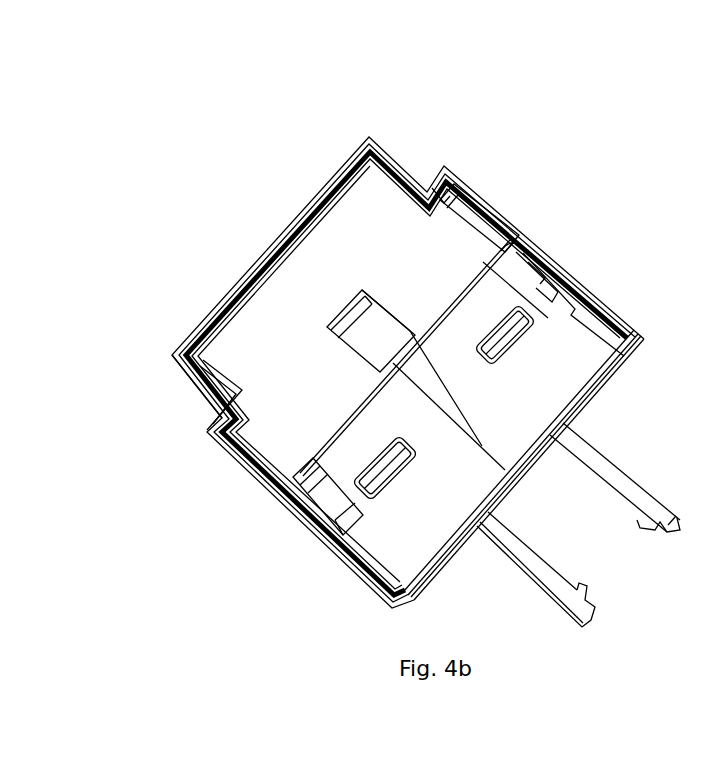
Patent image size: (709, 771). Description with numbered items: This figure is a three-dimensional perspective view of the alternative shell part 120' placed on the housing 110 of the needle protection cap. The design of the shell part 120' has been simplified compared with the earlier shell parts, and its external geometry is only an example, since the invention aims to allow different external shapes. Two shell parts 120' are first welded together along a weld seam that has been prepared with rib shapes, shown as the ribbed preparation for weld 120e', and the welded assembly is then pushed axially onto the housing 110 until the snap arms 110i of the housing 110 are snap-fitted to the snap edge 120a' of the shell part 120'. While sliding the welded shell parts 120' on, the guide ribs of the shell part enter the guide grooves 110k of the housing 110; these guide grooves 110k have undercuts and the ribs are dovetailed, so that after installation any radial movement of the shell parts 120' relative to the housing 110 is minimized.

The housing 110 is at (474, 348).
The snap arm with tooth 110i is at (363, 330).
The guide groove with undercut 110k is at (589, 514).
The alternative embodiment of the shell part 120' is at (349, 372).
The snap edge 120a' is at (479, 142).
The ribbed preparation for weld 120e' is at (117, 386).